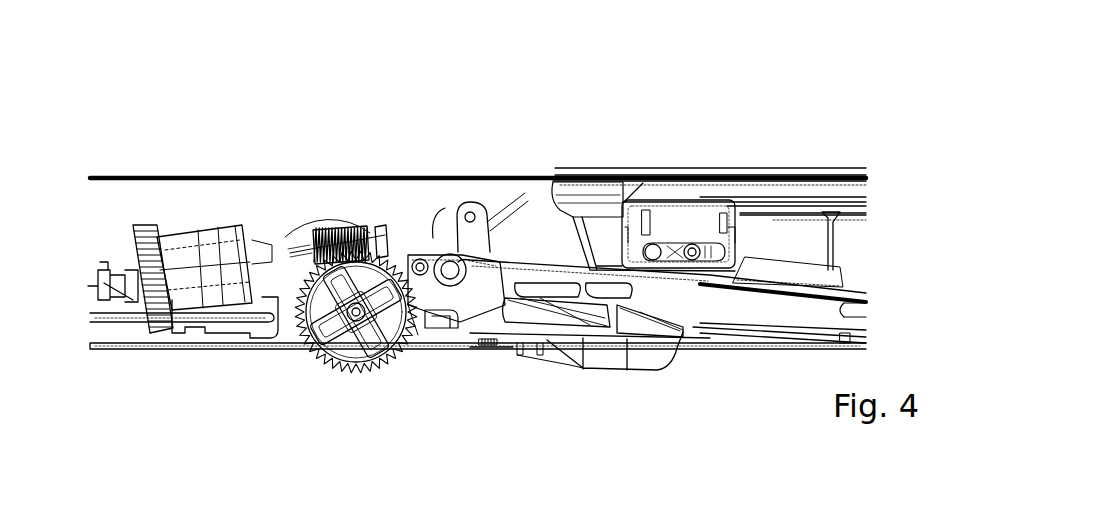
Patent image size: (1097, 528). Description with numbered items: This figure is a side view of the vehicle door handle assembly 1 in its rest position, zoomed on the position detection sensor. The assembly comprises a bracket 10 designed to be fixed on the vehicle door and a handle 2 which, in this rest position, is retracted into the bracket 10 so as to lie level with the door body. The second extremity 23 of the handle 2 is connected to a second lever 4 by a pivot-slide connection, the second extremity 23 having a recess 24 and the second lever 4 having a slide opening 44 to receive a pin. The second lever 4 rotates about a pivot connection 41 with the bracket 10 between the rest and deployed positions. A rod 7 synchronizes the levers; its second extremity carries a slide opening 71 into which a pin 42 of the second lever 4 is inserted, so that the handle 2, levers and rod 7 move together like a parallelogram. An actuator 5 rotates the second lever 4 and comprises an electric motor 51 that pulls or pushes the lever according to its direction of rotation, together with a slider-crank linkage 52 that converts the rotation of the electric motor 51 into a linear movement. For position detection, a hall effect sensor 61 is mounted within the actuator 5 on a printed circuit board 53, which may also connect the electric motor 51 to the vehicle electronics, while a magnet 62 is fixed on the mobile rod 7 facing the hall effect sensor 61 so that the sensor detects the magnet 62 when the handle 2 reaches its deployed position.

The vehicle door handle assembly 1 is at (214, 104).
The handle 2 is at (818, 150).
The second lever 4 is at (597, 380).
The actuator 5 is at (205, 203).
The rod 7 is at (697, 352).
The bracket 10 is at (308, 160).
The second extremity 23 is at (588, 172).
The recess 24 is at (716, 242).
The pivot connection 41 is at (470, 208).
The pin 42 is at (449, 262).
The slide opening 44 is at (692, 248).
The electric motor 51 is at (233, 292).
The slider-crank linkage 52 is at (270, 236).
The printed circuit board 53 is at (150, 352).
The hall effect sensor 61 is at (490, 347).
The magnet 62 is at (437, 330).
The slide opening 71 is at (416, 261).